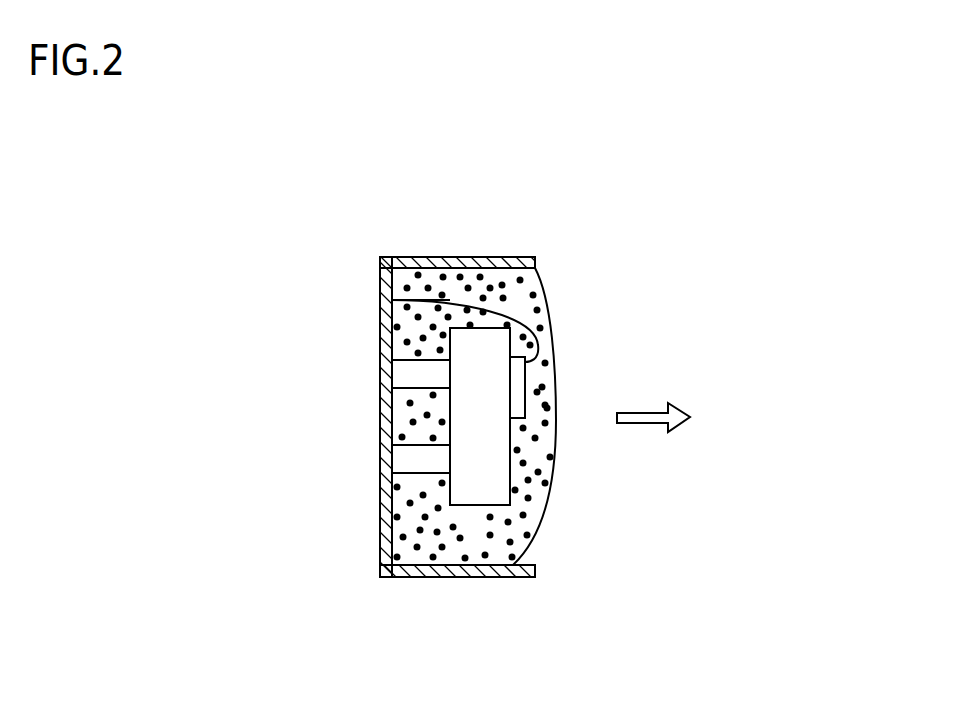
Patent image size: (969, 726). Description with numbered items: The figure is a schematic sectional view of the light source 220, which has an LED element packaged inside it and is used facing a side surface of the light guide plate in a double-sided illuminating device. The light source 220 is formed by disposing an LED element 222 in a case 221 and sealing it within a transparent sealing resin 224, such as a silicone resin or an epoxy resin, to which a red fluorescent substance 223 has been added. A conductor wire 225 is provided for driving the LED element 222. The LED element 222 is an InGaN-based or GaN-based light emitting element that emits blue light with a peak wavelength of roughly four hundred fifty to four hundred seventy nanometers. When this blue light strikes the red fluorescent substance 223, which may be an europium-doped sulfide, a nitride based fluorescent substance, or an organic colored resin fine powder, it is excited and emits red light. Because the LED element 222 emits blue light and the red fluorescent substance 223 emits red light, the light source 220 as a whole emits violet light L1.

The light source 220 is at (373, 385).
The case 221 is at (420, 578).
The LED element 222 is at (483, 492).
The red fluorescent substance 223 is at (547, 408).
The sealing resin 224 is at (540, 507).
The conductor wire 225 is at (507, 325).
The violet light L1 is at (647, 423).